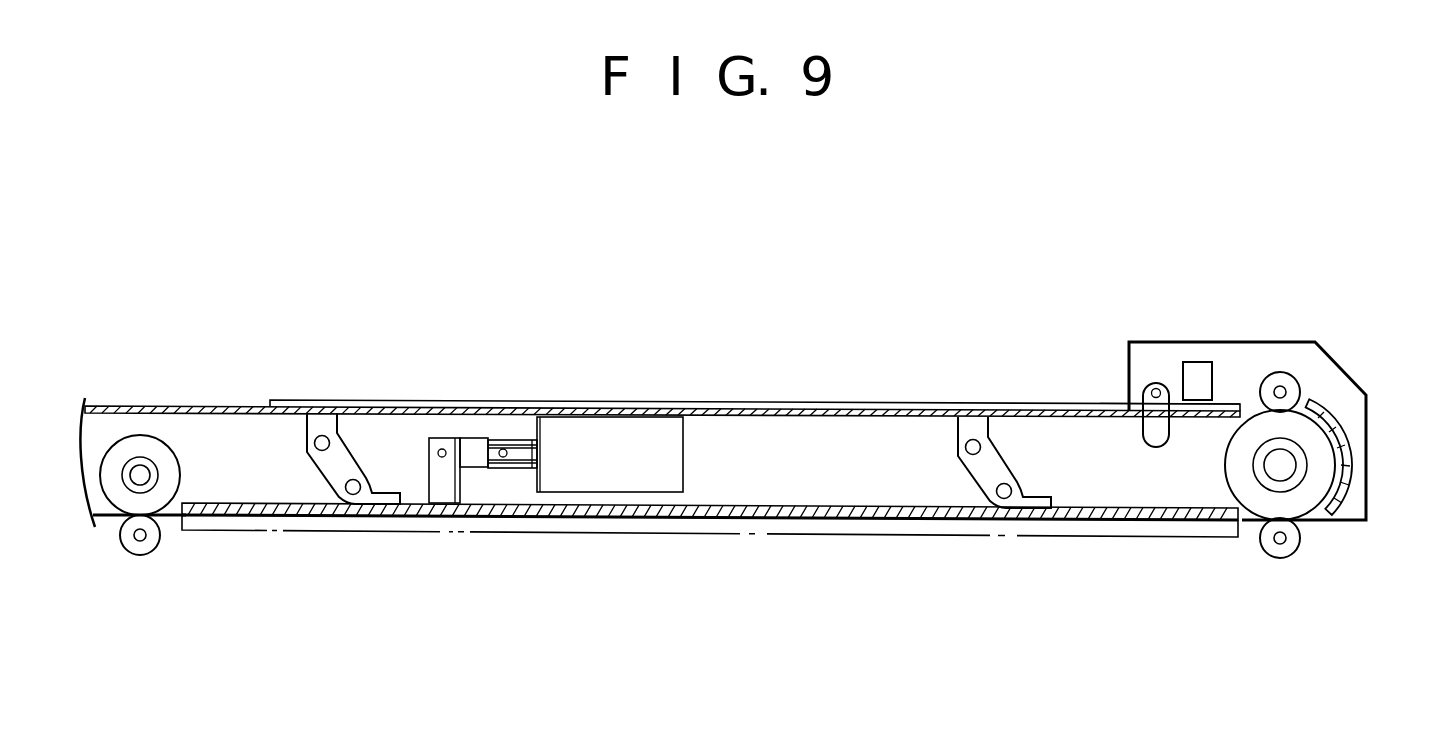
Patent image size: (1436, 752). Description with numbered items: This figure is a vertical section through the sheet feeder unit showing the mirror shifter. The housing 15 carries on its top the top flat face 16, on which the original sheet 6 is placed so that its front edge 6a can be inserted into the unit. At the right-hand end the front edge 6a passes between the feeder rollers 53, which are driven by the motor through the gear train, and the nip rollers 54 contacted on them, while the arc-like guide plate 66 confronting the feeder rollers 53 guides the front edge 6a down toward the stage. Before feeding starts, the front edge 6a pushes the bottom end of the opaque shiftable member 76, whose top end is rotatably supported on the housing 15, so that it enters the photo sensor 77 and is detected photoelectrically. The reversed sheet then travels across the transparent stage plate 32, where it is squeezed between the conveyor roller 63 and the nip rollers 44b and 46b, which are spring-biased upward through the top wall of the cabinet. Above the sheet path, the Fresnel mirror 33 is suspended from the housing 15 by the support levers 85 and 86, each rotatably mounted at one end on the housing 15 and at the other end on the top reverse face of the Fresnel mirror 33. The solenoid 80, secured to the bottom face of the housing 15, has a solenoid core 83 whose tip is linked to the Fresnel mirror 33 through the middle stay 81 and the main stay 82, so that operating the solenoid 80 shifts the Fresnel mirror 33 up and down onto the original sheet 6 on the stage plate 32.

The original sheet 6 is at (663, 400).
The front edge of the original sheet 6a is at (1120, 404).
The housing 15 is at (1345, 361).
The top flat face 16 is at (213, 406).
The stage plate 32 is at (676, 534).
The Fresnel mirror 33 is at (828, 521).
The nip roller 44b is at (1290, 558).
The nip roller 46b is at (153, 549).
The feeder roller 53 is at (1318, 500).
The nip roller 54 is at (1283, 376).
The conveyor roller 63 is at (137, 444).
The arc-like guide plate 66 is at (1356, 466).
The shiftable member 76 is at (1155, 388).
The photo sensor 77 is at (1205, 362).
The solenoid 80 is at (672, 458).
The middle stay 81 is at (476, 445).
The main stay 82 is at (446, 505).
The solenoid core 83 is at (523, 456).
The support lever 85 is at (324, 462).
The support lever 86 is at (1000, 466).